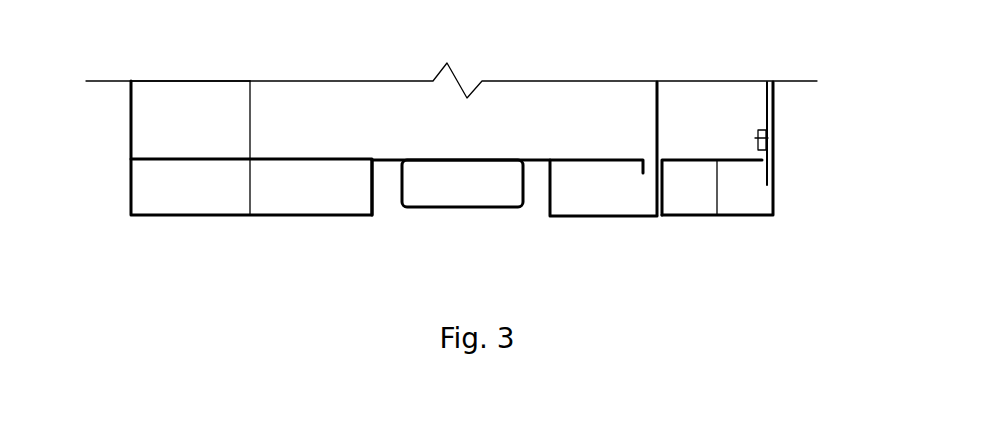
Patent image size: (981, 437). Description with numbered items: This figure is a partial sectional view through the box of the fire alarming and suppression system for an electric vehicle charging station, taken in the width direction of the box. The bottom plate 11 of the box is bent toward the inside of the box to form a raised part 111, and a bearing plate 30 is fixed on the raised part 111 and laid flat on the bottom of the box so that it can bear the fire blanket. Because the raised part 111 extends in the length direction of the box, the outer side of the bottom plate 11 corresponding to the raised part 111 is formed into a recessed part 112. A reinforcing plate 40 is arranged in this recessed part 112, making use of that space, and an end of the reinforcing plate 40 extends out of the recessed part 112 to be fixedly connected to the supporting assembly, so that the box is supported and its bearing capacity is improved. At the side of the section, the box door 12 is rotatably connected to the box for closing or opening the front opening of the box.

The bottom plate 11 is at (315, 218).
The raised part 111 is at (398, 158).
The recessed part 112 is at (386, 205).
The box door 12 is at (776, 118).
The bearing plate 30 is at (272, 157).
The reinforcing plate 40 is at (480, 207).